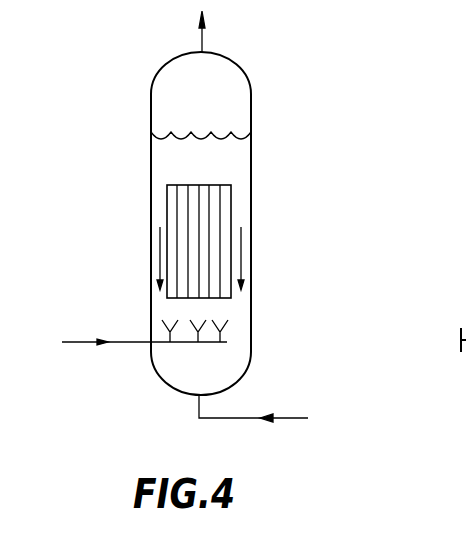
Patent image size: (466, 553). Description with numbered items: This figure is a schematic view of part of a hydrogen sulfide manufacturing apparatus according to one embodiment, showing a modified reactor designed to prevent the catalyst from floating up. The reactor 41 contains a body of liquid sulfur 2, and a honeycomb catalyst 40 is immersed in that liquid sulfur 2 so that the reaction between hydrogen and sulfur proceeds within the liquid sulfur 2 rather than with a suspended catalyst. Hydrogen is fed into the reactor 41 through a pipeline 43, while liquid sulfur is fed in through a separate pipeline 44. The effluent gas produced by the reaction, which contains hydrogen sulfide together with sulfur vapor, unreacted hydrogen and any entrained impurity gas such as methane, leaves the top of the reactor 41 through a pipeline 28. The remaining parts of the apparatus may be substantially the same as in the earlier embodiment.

The liquid sulfur 2 is at (227, 170).
The pipeline 28 is at (203, 33).
The honeycomb catalyst 40 is at (180, 207).
The reactor 41 is at (151, 96).
The pipeline 43 is at (90, 345).
The pipeline 44 is at (245, 418).